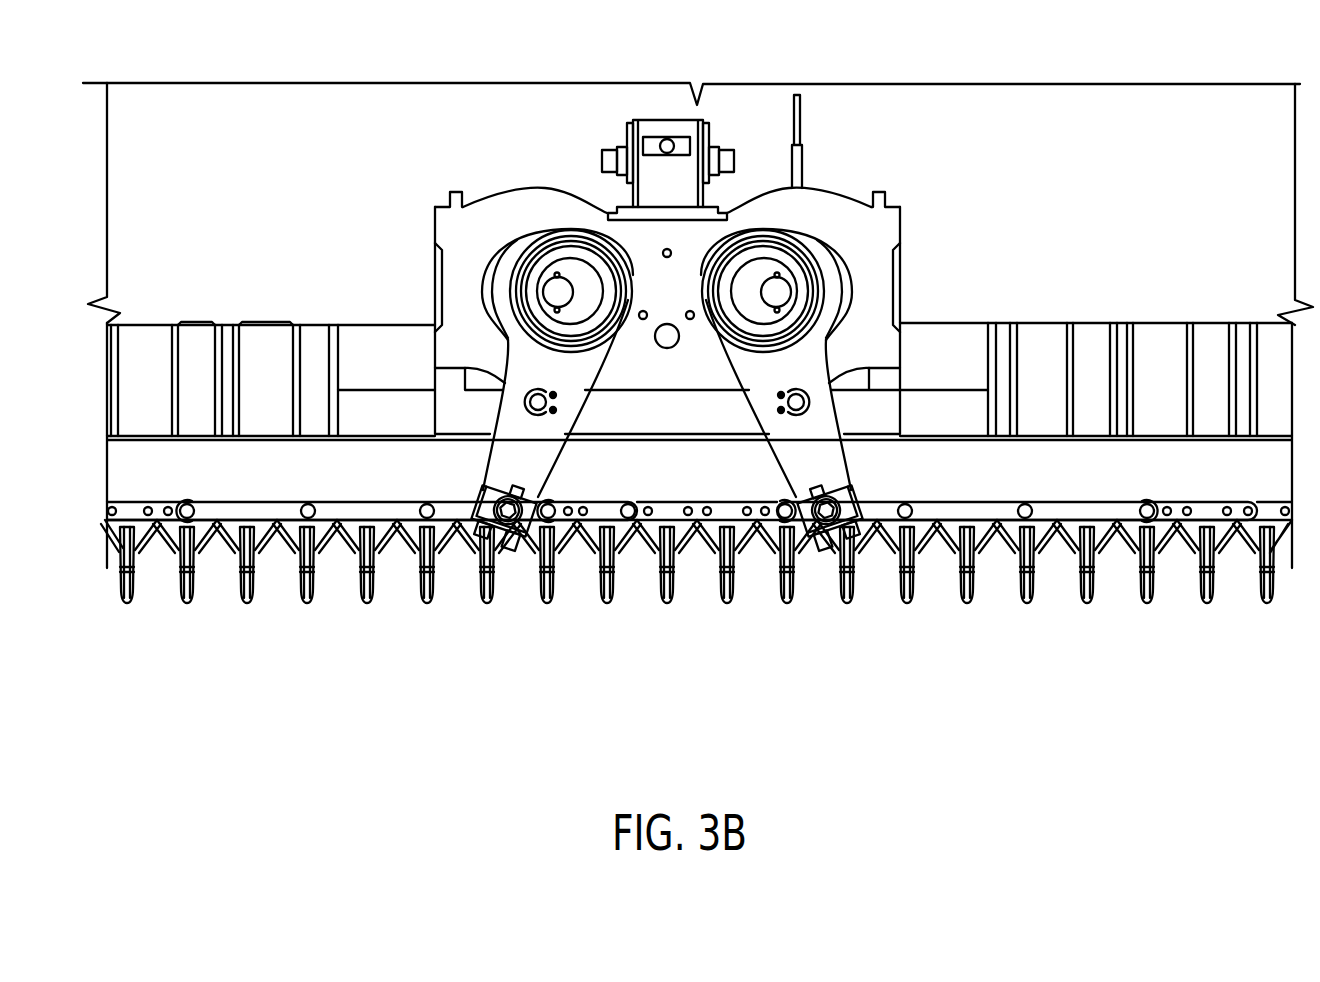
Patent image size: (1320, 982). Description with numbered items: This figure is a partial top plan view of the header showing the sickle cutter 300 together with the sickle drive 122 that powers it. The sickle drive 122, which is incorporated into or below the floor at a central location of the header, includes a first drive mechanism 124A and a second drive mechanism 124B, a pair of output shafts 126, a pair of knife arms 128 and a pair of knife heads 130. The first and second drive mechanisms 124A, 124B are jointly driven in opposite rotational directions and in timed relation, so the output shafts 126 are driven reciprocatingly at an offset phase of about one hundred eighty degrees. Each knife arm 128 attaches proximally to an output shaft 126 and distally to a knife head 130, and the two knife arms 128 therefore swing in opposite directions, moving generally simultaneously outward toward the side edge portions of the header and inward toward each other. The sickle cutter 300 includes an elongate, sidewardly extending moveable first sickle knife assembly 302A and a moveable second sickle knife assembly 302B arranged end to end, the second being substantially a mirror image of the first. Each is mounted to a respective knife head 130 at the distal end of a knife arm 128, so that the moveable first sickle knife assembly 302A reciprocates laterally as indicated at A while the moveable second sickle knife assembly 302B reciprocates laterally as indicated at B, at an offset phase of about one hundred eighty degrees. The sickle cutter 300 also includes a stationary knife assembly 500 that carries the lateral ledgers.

The sickle drive 122 is at (478, 122).
The first drive mechanism 124A is at (457, 243).
The second drive mechanism 124B is at (812, 217).
The output shaft 126 is at (773, 295).
The knife arm 128 is at (520, 368).
The knife head 130 is at (963, 512).
The sickle cutter 300 is at (548, 740).
The moveable first sickle knife assembly 302A is at (103, 682).
The moveable second sickle knife assembly 302B is at (777, 728).
The stationary knife assembly 500 is at (637, 615).